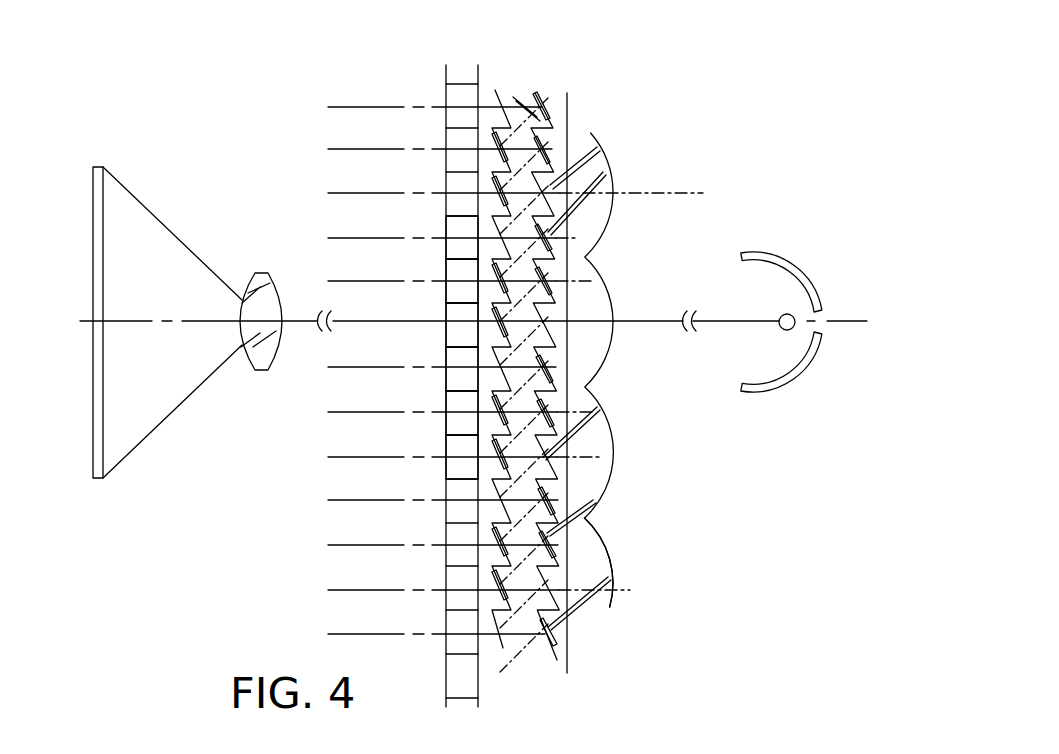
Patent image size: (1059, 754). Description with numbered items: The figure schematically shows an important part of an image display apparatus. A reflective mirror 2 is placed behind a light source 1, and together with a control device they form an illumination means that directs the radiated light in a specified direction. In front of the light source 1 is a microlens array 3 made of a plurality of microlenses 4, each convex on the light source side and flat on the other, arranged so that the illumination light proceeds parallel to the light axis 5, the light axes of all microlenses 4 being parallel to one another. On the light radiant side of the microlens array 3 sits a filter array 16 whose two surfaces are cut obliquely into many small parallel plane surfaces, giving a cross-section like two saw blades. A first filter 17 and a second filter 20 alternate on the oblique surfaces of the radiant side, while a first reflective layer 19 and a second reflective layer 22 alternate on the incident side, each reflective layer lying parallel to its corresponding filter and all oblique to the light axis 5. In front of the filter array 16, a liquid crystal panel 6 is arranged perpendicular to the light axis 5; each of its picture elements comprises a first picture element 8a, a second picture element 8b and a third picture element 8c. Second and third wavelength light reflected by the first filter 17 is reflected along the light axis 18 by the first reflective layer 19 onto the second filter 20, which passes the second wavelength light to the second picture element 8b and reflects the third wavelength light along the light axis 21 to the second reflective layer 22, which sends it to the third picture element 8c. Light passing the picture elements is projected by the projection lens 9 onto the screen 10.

The light source 1 is at (788, 313).
The reflective mirror 2 is at (768, 252).
The microlens array 3 is at (583, 522).
The microlens 4 is at (590, 134).
The light axis 5 is at (697, 193).
The liquid crystal panel 6 is at (460, 67).
The first picture element 8a is at (457, 335).
The second picture element 8b is at (455, 275).
The third picture element 8c is at (453, 226).
The projection lens 9 is at (256, 272).
The screen 10 is at (103, 210).
The filter array 16 is at (513, 93).
The first filter 17 is at (483, 330).
The light axis 18 is at (550, 300).
The first reflective layer 19 is at (585, 257).
The second filter 20 is at (488, 272).
The light axis 21 is at (558, 253).
The second reflective layer 22 is at (548, 237).